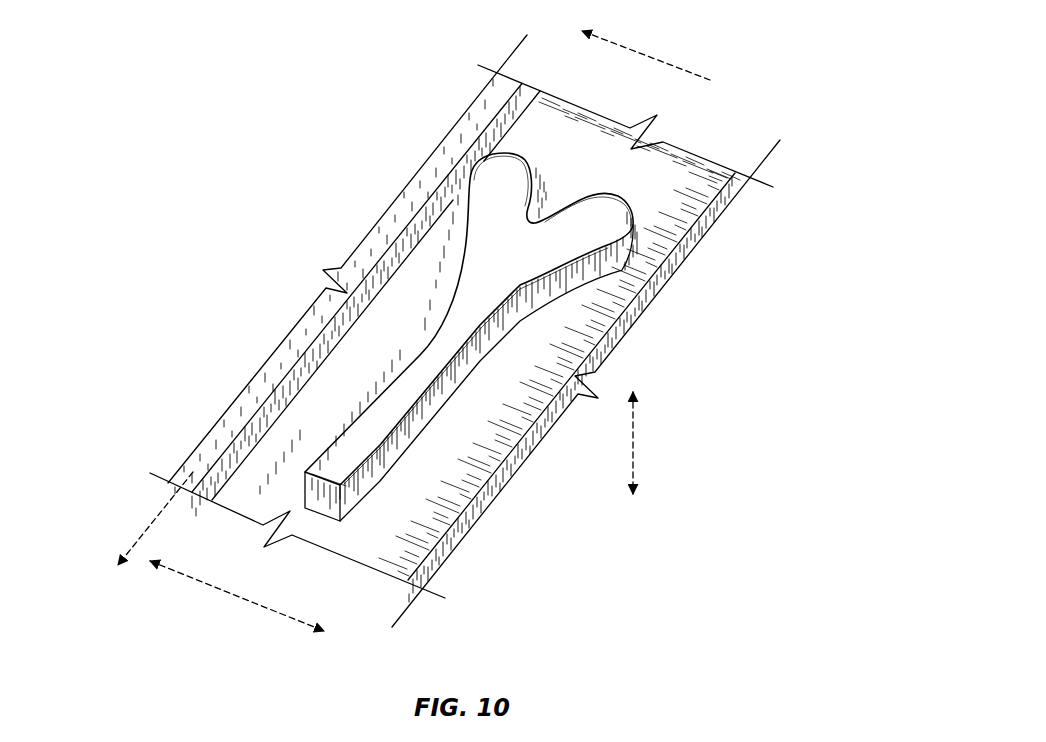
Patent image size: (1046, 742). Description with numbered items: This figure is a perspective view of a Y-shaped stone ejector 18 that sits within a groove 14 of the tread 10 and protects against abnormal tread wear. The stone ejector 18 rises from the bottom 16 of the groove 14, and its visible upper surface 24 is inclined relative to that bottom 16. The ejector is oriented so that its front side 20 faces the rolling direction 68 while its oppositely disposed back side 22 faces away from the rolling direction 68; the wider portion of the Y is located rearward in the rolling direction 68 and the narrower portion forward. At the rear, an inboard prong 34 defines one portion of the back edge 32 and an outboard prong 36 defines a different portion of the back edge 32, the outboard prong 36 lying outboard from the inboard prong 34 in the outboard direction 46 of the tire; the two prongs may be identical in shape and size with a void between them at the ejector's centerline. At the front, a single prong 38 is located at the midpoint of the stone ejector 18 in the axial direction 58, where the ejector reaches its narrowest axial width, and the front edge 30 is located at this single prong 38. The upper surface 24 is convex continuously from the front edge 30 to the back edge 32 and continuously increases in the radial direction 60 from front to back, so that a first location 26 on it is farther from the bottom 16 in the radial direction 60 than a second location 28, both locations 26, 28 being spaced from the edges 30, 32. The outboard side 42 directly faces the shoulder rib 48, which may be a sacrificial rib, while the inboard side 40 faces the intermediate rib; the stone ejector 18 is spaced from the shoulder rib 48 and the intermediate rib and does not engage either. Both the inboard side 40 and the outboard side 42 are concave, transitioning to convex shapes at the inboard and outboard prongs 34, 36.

The tread 10 is at (226, 114).
The groove 14 is at (563, 117).
The bottom 16 is at (660, 225).
The stone ejector 18 is at (485, 266).
The front side 20 is at (327, 506).
The back side 22 is at (613, 188).
The upper surface 24 is at (388, 398).
The first location 26 is at (487, 182).
The second location 28 is at (432, 342).
The front edge 30 is at (320, 492).
The back edge 32 is at (522, 158).
The inboard prong 34 is at (617, 218).
The outboard prong 36 is at (495, 168).
The single prong 38 is at (358, 442).
The inboard side 40 is at (502, 320).
The outboard side 42 is at (317, 448).
The outboard direction 46 is at (647, 60).
The shoulder rib 48 is at (490, 93).
The axial direction 58 is at (238, 597).
The radial direction 60 is at (648, 440).
The rolling direction 68 is at (136, 540).